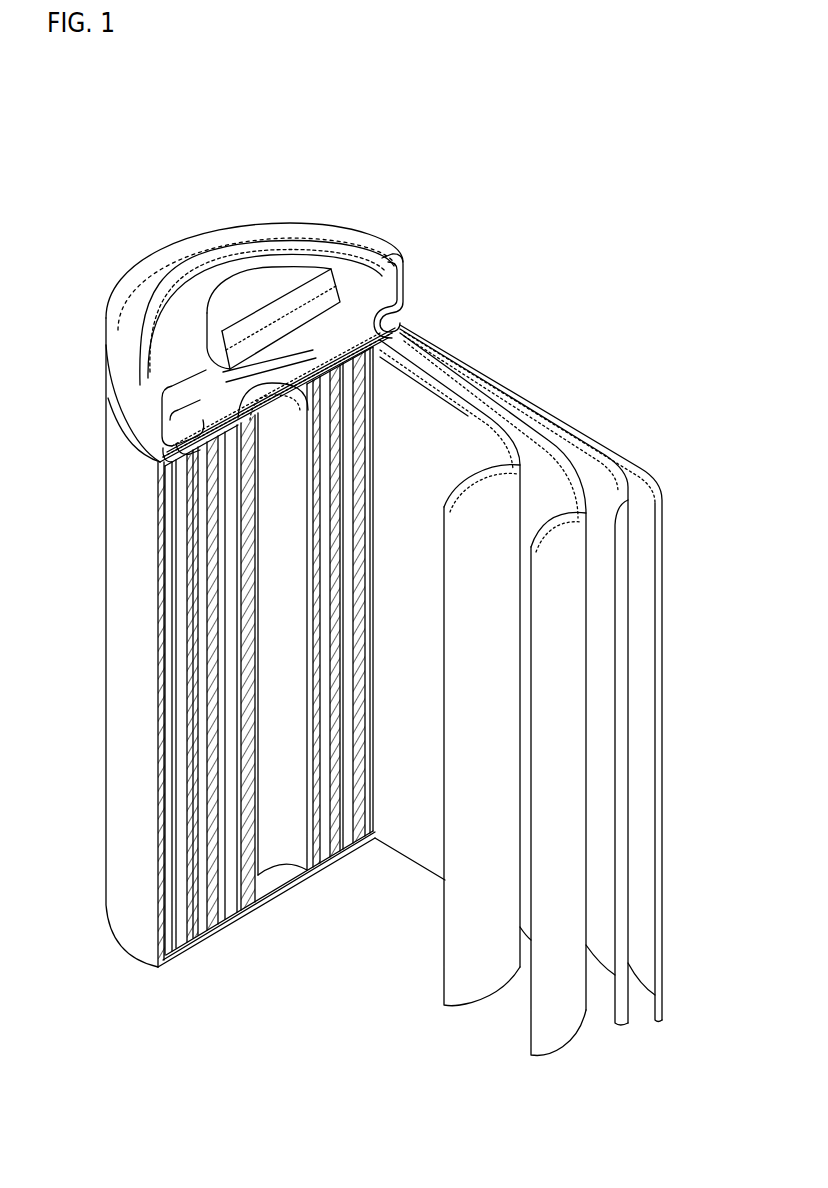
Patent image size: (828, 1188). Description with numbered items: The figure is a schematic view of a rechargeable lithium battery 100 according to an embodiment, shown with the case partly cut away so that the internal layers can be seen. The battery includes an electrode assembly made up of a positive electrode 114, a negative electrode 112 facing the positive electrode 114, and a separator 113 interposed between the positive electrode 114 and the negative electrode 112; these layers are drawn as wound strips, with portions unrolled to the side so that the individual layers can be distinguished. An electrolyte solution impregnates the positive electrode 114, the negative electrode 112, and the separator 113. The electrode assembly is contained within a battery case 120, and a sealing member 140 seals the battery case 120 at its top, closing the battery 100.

The rechargeable lithium battery 100 is at (463, 201).
The negative electrode 112 is at (653, 492).
The separator 113 is at (483, 412).
The positive electrode 114 is at (540, 442).
The battery case 120 is at (123, 597).
The sealing member 140 is at (232, 252).